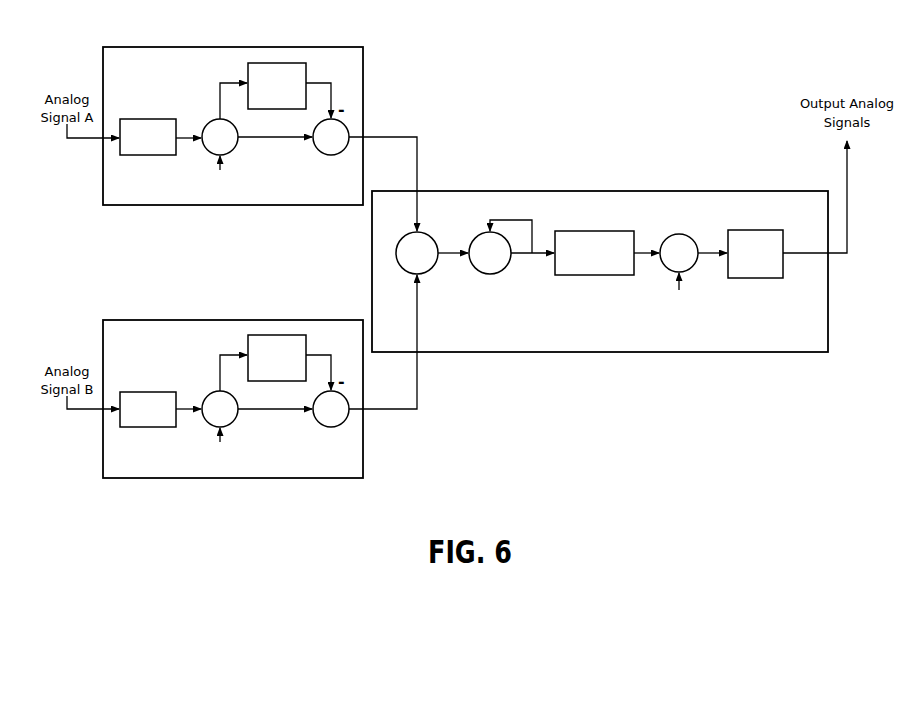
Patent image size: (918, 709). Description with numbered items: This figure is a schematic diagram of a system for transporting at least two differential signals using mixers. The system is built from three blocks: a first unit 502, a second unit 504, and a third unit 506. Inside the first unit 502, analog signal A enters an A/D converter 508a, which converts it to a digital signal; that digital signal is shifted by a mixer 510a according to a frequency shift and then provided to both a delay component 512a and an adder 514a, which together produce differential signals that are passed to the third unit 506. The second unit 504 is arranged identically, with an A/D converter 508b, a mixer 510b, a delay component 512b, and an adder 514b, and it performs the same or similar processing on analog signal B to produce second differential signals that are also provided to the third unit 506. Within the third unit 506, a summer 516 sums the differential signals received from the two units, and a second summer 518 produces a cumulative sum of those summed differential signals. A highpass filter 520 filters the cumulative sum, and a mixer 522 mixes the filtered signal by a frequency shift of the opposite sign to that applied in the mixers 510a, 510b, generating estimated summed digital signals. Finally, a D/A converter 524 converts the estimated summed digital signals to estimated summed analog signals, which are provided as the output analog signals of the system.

The first unit 502 is at (148, 47).
The second unit 504 is at (148, 320).
The third unit 506 is at (460, 191).
The A/D converter 508a is at (152, 119).
The A/D converter 508b is at (152, 392).
The mixer 510a is at (233, 149).
The mixer 510b is at (233, 421).
The delay component 512a is at (297, 63).
The delay component 512b is at (297, 335).
The adder 514a is at (346, 127).
The adder 514b is at (347, 400).
The summer 516 is at (435, 241).
The second summer 518 is at (481, 273).
The highpass filter 520 is at (622, 231).
The mixer 522 is at (691, 238).
The D/A converter 524 is at (768, 230).